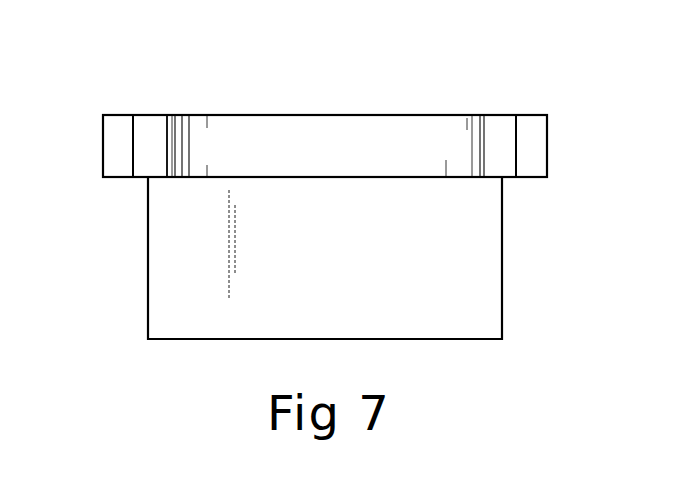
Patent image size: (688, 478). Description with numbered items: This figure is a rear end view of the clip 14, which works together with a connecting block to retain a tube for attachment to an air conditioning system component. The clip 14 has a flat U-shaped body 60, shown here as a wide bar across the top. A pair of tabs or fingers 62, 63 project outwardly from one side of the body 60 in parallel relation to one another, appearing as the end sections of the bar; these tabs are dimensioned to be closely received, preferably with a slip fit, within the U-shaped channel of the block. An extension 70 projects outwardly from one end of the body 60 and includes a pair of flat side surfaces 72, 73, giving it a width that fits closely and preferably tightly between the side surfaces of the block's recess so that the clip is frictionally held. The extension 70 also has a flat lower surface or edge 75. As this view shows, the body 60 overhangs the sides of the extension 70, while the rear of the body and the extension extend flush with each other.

The clip 14 is at (458, 88).
The U-shaped body 60 is at (285, 133).
The tabs 62 is at (537, 157).
The left end section 63 is at (110, 152).
The extension 70 is at (472, 295).
The flat side surface 72 is at (502, 227).
The flat side surface 73 is at (148, 278).
The flat lower surface 75 is at (472, 342).